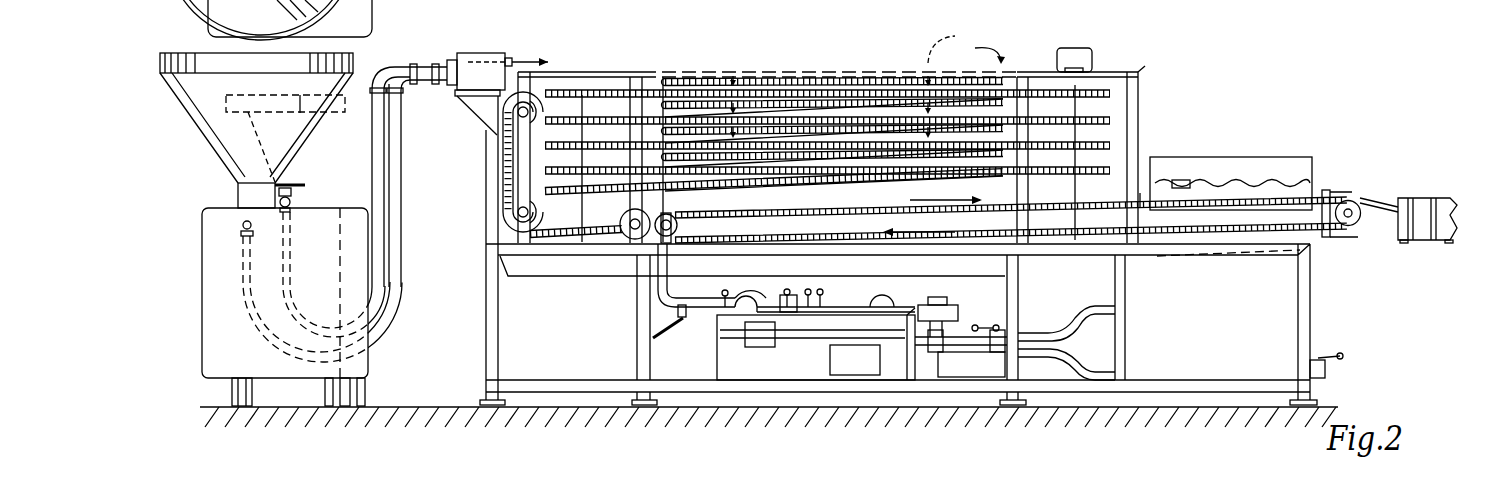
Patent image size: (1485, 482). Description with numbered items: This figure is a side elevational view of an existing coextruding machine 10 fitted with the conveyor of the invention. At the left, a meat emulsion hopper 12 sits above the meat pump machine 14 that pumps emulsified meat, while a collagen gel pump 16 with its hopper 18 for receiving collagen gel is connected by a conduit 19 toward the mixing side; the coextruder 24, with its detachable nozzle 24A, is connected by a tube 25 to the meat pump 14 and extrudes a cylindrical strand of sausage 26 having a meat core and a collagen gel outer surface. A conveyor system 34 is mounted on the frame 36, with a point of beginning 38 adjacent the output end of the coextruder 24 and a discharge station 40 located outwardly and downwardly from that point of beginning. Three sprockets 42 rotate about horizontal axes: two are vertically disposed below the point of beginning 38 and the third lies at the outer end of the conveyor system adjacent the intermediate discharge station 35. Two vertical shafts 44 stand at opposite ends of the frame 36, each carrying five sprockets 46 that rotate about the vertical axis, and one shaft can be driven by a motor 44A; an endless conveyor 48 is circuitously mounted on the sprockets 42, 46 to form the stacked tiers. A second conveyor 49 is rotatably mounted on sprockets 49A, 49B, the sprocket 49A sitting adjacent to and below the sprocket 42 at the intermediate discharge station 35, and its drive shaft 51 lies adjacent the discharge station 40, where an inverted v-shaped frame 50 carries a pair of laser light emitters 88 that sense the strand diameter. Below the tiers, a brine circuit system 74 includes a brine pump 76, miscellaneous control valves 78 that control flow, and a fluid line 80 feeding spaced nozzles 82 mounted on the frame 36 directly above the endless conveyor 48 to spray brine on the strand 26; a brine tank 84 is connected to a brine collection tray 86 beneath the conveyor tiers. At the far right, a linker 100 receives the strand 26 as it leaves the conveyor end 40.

The coextruding machine 10 is at (1172, 70).
The meat emulsion hopper 12 is at (216, 150).
The meat pump machine 14 is at (353, 228).
The collagen gel pump 16 is at (340, 270).
The hopper 18 is at (313, 148).
The conduit 19 is at (377, 137).
The coextruder 24 is at (477, 84).
The detachable nozzle 24A is at (510, 52).
The tube 25 is at (397, 188).
The coextruded strand of sausage 26 is at (1215, 196).
The conveyor system 34 is at (966, 52).
The intermediate discharge station 35 is at (677, 205).
The frame 36 is at (483, 316).
The point of beginning 38 is at (862, 123).
The discharge station 40 is at (1368, 232).
The sprockets 42 is at (540, 97).
The vertical shafts 44 is at (625, 232).
The motor 44A is at (1095, 56).
The sprockets 46 is at (603, 192).
The endless conveyor 48 is at (505, 166).
The second conveyor 49 is at (863, 208).
The sprocket 49A is at (675, 228).
The sprocket 49B is at (1358, 188).
The inverted v-shaped frame 50 is at (1183, 168).
The drive shaft 51 is at (1346, 210).
The brine circuit system 74 is at (837, 355).
The brine pump 76 is at (947, 310).
The control valves 78 is at (757, 312).
The fluid line 80 is at (698, 310).
The nozzles 82 is at (733, 75).
The brine tank 84 is at (1228, 321).
The brine collection tray 86 is at (1090, 270).
The laser light emitters 88 is at (1150, 215).
The linker 100 is at (1440, 244).